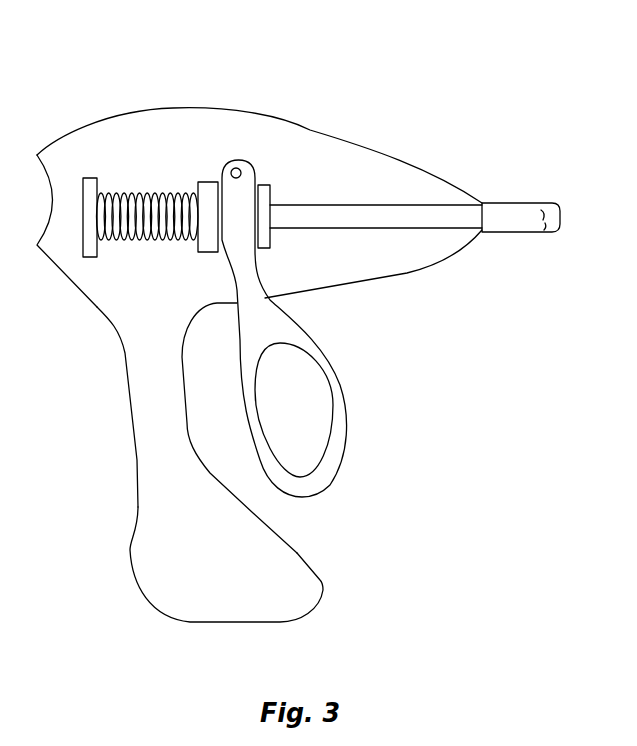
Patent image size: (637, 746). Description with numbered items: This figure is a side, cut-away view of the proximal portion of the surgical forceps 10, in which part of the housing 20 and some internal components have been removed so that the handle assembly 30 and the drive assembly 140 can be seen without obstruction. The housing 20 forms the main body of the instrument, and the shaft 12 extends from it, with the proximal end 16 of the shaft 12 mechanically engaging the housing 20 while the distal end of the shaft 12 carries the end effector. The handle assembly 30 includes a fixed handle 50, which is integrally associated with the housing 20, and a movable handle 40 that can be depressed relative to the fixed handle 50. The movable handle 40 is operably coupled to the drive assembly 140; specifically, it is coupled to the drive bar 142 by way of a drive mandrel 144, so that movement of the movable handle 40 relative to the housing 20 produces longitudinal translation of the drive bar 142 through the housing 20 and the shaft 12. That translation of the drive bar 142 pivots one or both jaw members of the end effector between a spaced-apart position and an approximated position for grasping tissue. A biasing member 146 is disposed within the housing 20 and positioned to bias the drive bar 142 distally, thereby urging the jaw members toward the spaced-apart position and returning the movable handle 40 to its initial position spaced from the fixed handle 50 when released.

The forceps 10 is at (376, 81).
The shaft 12 is at (545, 207).
The proximal end 16 is at (512, 203).
The housing 20 is at (148, 107).
The handle assembly 30 is at (343, 513).
The movable handle 40 is at (347, 437).
The fixed handle 50 is at (322, 583).
The drive assembly 140 is at (270, 172).
The drive bar 142 is at (395, 230).
The drive mandrel 144 is at (211, 182).
The biasing member 146 is at (130, 246).